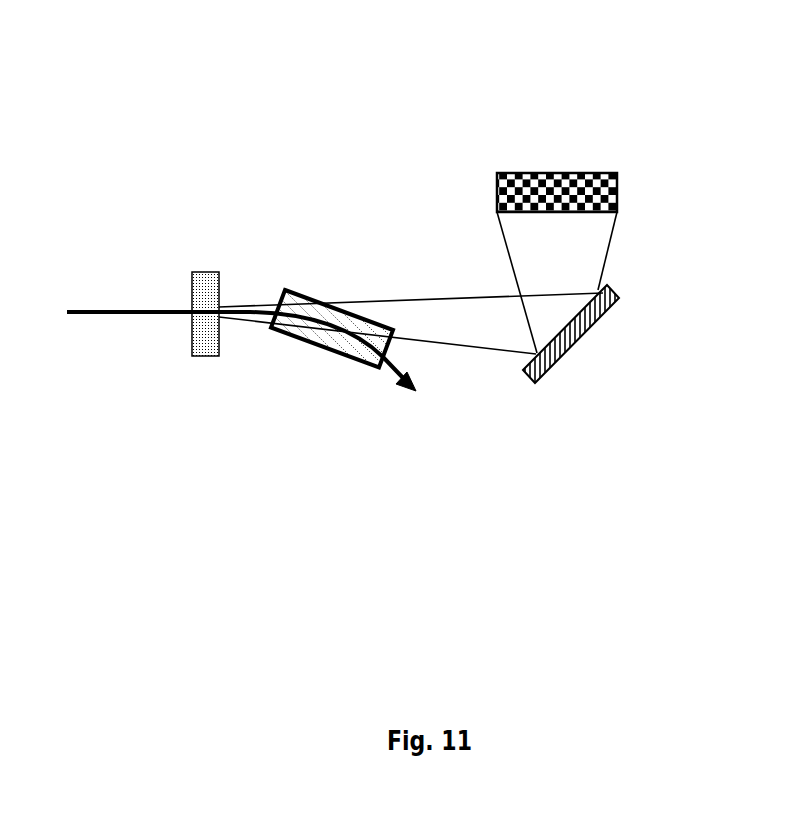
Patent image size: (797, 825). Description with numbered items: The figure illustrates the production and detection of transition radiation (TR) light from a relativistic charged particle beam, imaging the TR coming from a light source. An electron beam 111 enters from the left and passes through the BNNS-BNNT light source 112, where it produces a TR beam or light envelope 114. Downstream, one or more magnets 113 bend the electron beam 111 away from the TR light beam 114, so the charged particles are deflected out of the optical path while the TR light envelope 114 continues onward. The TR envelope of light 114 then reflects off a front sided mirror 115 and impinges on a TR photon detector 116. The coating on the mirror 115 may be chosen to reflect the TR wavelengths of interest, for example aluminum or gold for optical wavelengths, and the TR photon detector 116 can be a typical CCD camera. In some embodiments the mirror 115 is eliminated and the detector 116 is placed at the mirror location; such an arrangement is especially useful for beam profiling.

The electron beam 111 is at (160, 315).
The BNNS-BNNT light source 112 is at (203, 272).
The magnet 113 is at (345, 307).
The TR light envelope 114 is at (510, 250).
The front sided mirror 115 is at (573, 343).
The TR photon detector 116 is at (570, 173).